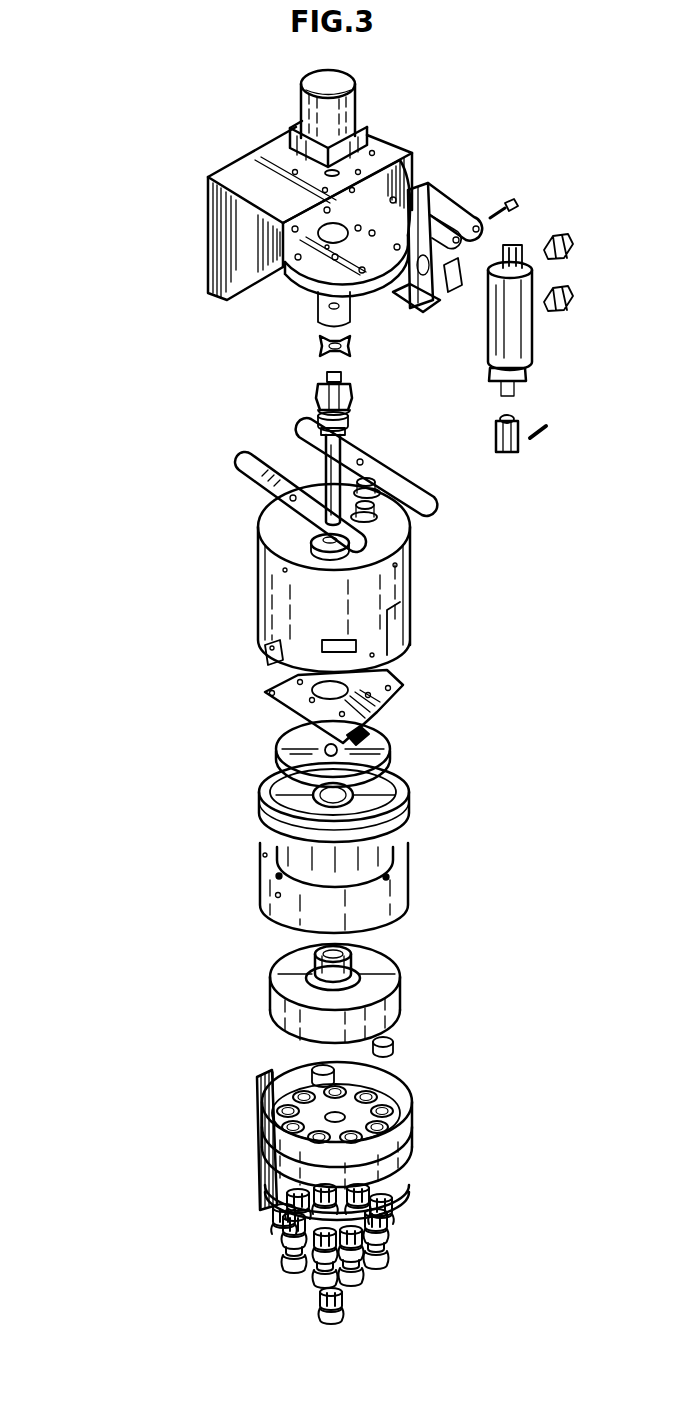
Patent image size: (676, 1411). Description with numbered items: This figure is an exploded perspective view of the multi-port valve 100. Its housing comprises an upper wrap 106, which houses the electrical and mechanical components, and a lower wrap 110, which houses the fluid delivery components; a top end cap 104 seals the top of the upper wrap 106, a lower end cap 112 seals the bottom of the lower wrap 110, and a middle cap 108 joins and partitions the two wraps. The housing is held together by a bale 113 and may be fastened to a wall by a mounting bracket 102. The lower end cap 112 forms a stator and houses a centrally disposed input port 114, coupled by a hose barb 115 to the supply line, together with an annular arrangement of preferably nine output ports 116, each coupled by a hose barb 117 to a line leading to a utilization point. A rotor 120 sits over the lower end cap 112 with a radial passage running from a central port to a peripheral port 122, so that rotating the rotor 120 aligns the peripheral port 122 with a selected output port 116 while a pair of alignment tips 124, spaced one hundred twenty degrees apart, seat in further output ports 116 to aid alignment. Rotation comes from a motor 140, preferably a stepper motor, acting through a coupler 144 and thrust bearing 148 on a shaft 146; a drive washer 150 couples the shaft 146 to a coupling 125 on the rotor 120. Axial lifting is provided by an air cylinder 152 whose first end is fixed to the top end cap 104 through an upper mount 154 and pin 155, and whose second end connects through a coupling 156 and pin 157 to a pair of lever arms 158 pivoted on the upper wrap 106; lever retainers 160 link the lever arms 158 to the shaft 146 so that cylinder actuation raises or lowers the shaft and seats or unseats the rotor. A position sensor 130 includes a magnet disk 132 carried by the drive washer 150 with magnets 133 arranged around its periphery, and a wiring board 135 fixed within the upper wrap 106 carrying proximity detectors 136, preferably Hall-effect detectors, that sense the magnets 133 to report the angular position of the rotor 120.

The multi-port valve 100 is at (275, 107).
The mounting bracket 102 is at (193, 198).
The top end cap 104 is at (439, 194).
The upper wrap 106 is at (250, 600).
The middle cap 108 is at (412, 827).
The lower wrap 110 is at (250, 872).
The lower end cap 112 is at (415, 1162).
The bale 113 is at (260, 1140).
The input port 114 is at (407, 1090).
The hose barb 115 is at (320, 1307).
The output ports 116 is at (408, 1113).
The hose barb 117 is at (380, 1271).
The rotor 120 is at (407, 1012).
The peripheral port 122 is at (287, 1022).
The alignment tips 124 is at (405, 1051).
The coupling 125 is at (360, 952).
The position sensor 130 is at (412, 678).
The magnet disk 132 is at (271, 733).
The magnets 133 is at (380, 766).
The wiring board 135 is at (412, 707).
The proximity detectors 136 is at (371, 737).
The motor 140 is at (366, 100).
The coupler 144 is at (310, 332).
The shaft 146 is at (316, 466).
The thrust bearing 148 is at (310, 407).
The drive washer 150 is at (307, 532).
The air cylinder 152 is at (538, 345).
The upper mount 154 is at (464, 256).
The pin 155 is at (522, 207).
The coupling 156 is at (503, 456).
The pin 157 is at (551, 438).
The lever arms 158 is at (358, 542).
The lever retainers 160 is at (385, 513).